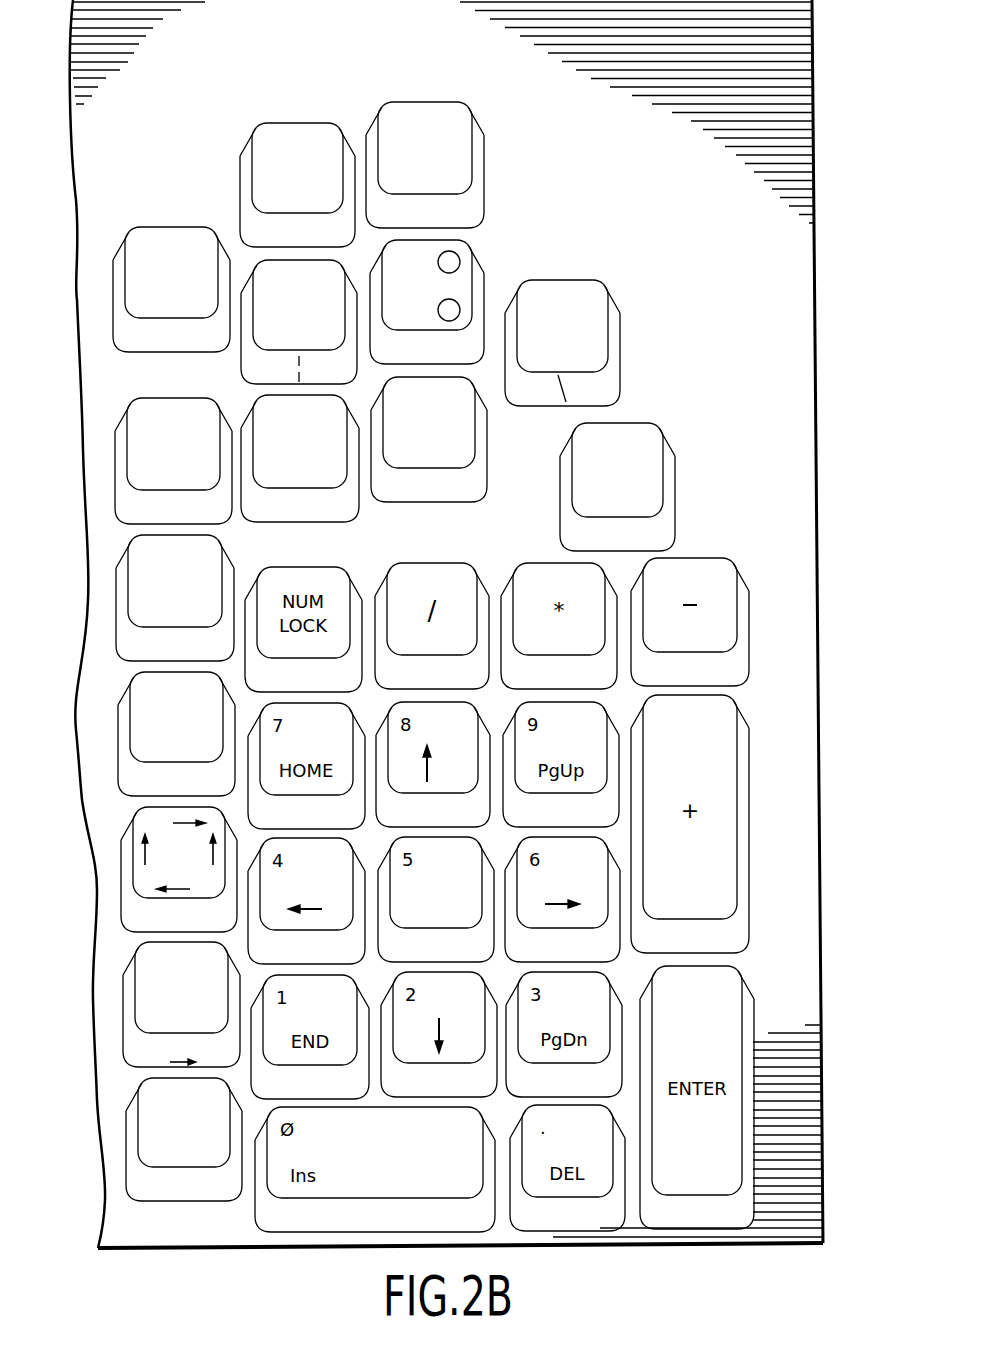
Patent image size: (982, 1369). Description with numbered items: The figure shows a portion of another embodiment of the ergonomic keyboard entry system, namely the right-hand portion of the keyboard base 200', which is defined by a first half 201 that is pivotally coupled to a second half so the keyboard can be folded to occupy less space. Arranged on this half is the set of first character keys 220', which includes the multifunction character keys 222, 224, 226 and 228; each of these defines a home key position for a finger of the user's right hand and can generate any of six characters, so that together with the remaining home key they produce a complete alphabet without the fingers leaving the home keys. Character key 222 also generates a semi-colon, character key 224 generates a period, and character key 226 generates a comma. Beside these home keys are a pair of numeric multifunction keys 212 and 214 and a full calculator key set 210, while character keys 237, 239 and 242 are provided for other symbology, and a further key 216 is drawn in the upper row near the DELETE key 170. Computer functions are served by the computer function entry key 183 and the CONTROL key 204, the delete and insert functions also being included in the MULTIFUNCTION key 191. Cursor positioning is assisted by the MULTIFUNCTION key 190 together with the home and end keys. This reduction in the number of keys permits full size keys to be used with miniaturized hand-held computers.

The keyboard base 200' is at (476, 624).
The first half 201 is at (806, 245).
The DELETE key 170 is at (293, 123).
The CONTROL key 204 is at (162, 227).
The scroll lock/break/print screen key 216 is at (484, 171).
The character key 237 is at (484, 268).
The character key 239 is at (622, 305).
The character key 242 is at (242, 370).
The numeric multifunction key 214 is at (127, 400).
The character key 226 is at (345, 512).
The character key 224 is at (460, 505).
The character key 222 is at (675, 485).
The set of first character keys 220' is at (658, 451).
The character key 228 is at (222, 548).
The calculator key set 210 is at (727, 550).
The numeric multifunction key 212 is at (130, 735).
The MULTIFUNCTION key 190 is at (133, 893).
The MULTIFUNCTION key 191 is at (135, 1018).
The computer function entry key 183 is at (128, 1148).